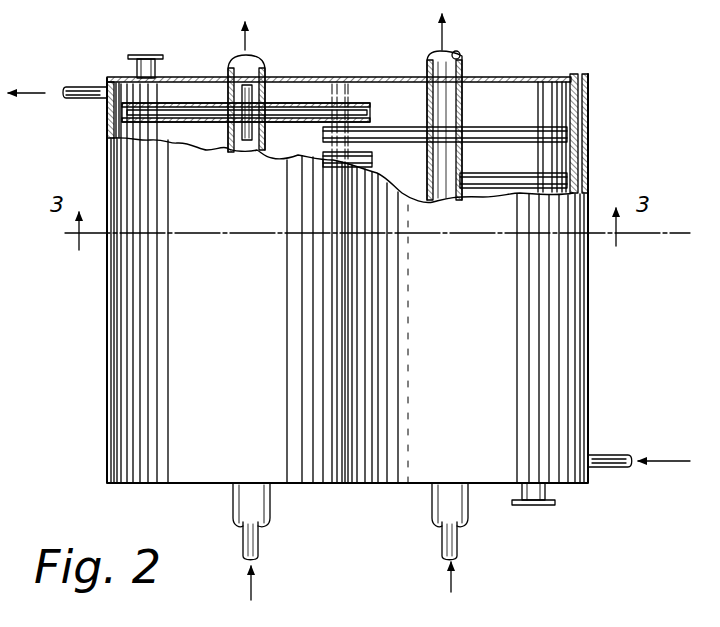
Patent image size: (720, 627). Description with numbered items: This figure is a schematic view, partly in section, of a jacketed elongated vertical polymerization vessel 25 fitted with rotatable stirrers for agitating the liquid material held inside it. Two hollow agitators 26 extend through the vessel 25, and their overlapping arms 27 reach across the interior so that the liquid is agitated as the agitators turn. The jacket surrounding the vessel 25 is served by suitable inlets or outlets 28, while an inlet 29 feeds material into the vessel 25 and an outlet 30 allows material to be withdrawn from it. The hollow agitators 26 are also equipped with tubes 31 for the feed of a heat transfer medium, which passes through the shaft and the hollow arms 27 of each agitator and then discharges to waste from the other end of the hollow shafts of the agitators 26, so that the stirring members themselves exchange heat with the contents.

The polymerization vessel 25 is at (157, 485).
The hollow agitators 26 is at (258, 63).
The overlapping arms 27 is at (400, 137).
The inlets or outlets 28 is at (78, 97).
The inlet 29 is at (136, 63).
The outlet 30 is at (547, 492).
The tubes 31 is at (256, 545).